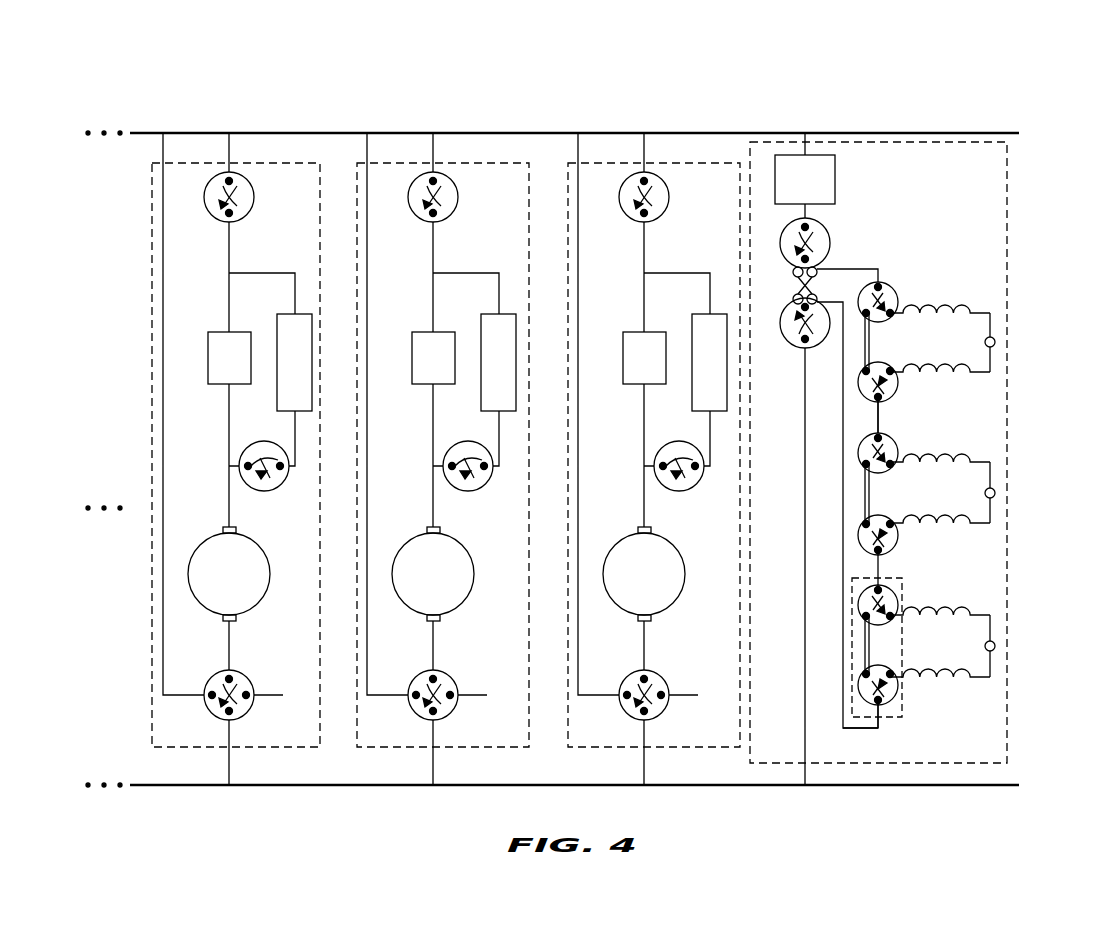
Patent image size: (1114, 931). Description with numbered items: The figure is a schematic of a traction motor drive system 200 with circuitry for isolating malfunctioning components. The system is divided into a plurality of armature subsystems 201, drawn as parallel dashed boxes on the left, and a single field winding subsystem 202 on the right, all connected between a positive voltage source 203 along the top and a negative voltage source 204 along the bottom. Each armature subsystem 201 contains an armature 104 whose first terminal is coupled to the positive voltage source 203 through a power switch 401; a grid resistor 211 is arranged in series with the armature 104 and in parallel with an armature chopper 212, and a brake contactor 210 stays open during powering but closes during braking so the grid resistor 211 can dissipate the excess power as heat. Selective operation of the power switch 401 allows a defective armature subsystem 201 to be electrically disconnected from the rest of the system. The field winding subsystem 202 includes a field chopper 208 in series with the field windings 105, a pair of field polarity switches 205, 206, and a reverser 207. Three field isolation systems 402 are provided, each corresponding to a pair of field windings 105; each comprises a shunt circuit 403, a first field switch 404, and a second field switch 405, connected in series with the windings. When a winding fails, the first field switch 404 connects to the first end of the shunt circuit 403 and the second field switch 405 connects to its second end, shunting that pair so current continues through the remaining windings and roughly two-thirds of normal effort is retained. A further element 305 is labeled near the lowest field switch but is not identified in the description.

The traction motor drive system 200 is at (220, 93).
The armature subsystem 201 is at (140, 667).
The field winding subsystem 202 is at (1040, 632).
The positive voltage source 203 is at (1000, 112).
The negative voltage source 204 is at (1012, 797).
The field polarity switch 205 is at (824, 243).
The field polarity switch 206 is at (793, 332).
The reverser 207 is at (510, 504).
The field chopper 208 is at (823, 188).
The brake contactor 210 is at (471, 480).
The grid resistor 211 is at (313, 372).
The armature chopper 212 is at (247, 367).
The armature 104 is at (247, 583).
The field winding 105 is at (942, 480).
The breaker connection 305 is at (894, 702).
The power switch 401 is at (456, 197).
The field isolation system 402 is at (896, 720).
The shunt circuit 403 is at (862, 645).
The first field switch 404 is at (886, 283).
The second field switch 405 is at (900, 415).